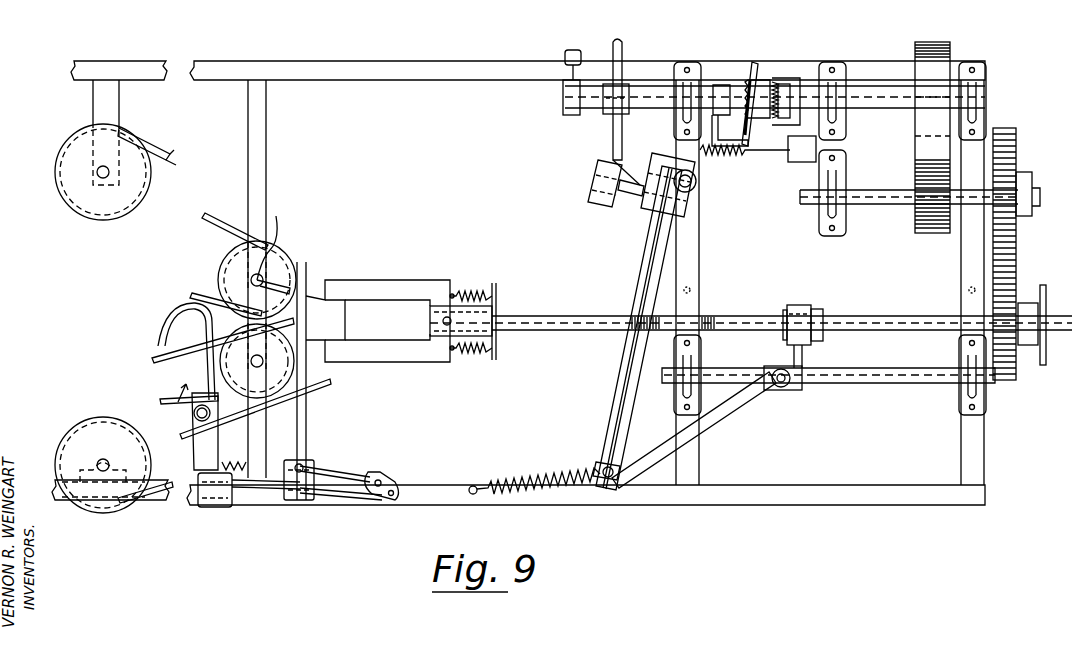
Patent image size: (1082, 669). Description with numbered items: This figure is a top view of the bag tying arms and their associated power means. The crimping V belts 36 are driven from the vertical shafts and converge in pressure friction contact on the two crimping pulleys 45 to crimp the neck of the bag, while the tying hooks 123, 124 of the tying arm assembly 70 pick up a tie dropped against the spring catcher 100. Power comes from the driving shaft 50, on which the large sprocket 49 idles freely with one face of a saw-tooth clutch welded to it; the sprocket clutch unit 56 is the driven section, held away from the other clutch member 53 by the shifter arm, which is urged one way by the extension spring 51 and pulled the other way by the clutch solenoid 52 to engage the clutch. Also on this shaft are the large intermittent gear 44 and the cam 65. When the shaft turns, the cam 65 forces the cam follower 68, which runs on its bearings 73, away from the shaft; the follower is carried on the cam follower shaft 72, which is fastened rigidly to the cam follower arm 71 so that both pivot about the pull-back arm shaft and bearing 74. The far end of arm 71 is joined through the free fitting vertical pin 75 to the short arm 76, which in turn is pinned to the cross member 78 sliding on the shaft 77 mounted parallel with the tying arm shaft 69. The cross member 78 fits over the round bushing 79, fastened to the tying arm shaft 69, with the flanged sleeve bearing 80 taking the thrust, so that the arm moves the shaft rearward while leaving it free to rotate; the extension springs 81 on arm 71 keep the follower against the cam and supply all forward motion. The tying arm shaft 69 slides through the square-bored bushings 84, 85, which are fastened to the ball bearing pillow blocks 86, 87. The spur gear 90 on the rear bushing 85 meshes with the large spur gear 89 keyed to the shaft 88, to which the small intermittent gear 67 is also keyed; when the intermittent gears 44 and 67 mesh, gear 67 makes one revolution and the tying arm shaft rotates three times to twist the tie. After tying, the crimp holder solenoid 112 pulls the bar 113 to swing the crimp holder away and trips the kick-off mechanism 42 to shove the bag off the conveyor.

The crimping V belt 36 is at (205, 292).
The kick-off mechanism 42 is at (205, 362).
The large intermittent gear 44 is at (950, 52).
The crimping pulley 45 is at (290, 260).
The large sprocket 49 is at (742, 62).
The driving shaft 50 is at (875, 86).
The extension spring 51 is at (732, 152).
The clutch solenoid 52 is at (797, 162).
The clutch member 53 is at (752, 80).
The sprocket clutch unit 56 is at (790, 75).
The cam 65 is at (623, 42).
The small intermittent gear 67 is at (915, 176).
The cam follower 68 is at (630, 158).
The tying arm shaft 69 is at (560, 316).
The tying arm assembly 70 is at (604, 410).
The cam follower arm 71 is at (636, 245).
The cam follower shaft 72 is at (660, 140).
The bearing 73 is at (600, 176).
The pull-back arm shaft and bearing 74 is at (696, 185).
The vertical pin 75 is at (604, 462).
The short arm 76 is at (735, 410).
The shaft 77 is at (884, 383).
The cross member 78 is at (812, 350).
The round bushing 79 is at (825, 314).
The flanged sleeve bearing 80 is at (794, 304).
The extension spring 81 is at (540, 482).
The bushing 84 is at (700, 312).
The rear bushing 85 is at (960, 300).
The ball bearing pillow block 86 is at (700, 290).
The ball bearing pillow block 87 is at (960, 340).
The shaft 88 is at (852, 190).
The large spur gear 89 is at (1017, 145).
The spur gear 90 is at (1010, 290).
The spring catcher 100 is at (812, 300).
The crimp holder solenoid 112 is at (213, 507).
The bar 113 is at (308, 500).
The tying hook 123 is at (258, 408).
The tying hook 124 is at (274, 222).